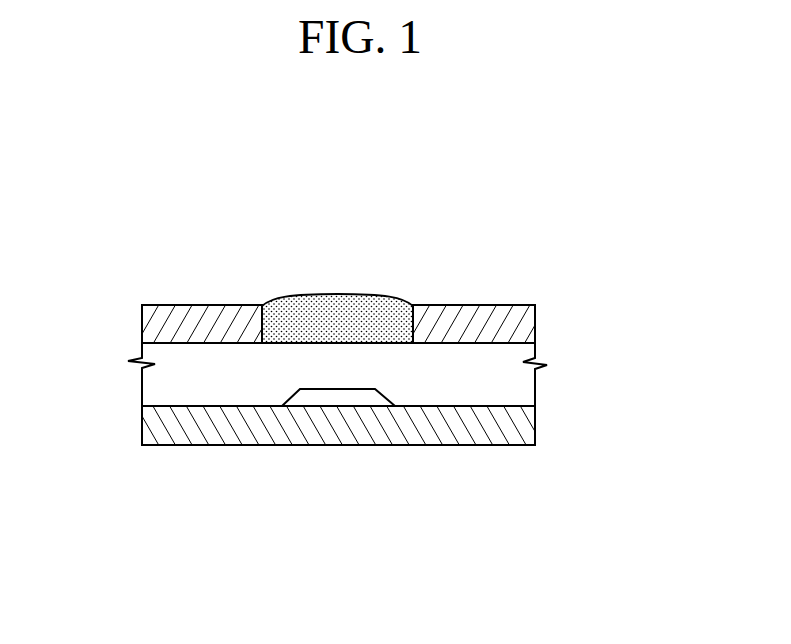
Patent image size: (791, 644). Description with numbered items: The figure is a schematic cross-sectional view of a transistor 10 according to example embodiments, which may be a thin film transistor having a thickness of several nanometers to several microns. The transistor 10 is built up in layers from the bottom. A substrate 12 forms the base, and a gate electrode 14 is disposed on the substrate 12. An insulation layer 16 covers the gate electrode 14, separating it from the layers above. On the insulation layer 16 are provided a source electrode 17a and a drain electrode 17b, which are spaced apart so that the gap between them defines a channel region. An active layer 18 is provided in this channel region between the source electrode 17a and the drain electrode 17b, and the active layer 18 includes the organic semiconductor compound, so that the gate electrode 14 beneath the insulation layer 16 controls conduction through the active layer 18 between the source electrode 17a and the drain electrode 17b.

The transistor 10 is at (276, 256).
The substrate 12 is at (516, 428).
The gate electrode 14 is at (342, 398).
The insulation layer 16 is at (516, 383).
The source electrode 17a is at (200, 320).
The drain electrode 17b is at (478, 320).
The active layer 18 is at (342, 305).